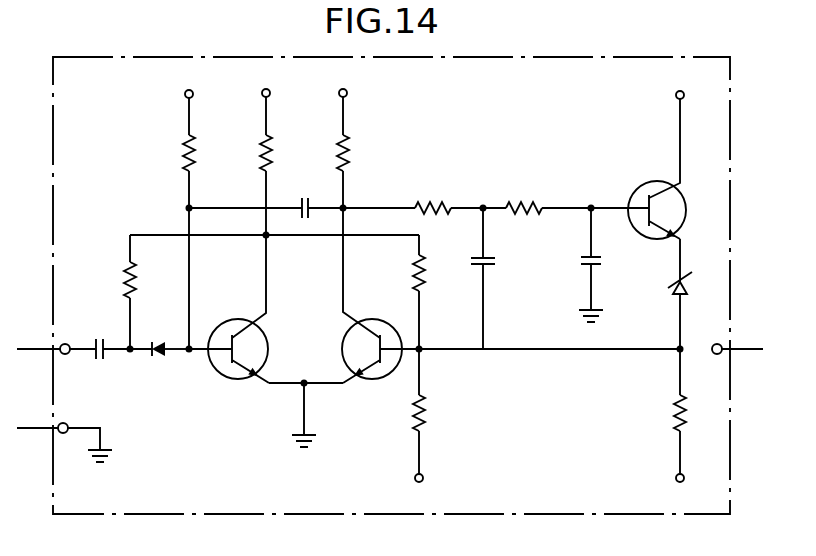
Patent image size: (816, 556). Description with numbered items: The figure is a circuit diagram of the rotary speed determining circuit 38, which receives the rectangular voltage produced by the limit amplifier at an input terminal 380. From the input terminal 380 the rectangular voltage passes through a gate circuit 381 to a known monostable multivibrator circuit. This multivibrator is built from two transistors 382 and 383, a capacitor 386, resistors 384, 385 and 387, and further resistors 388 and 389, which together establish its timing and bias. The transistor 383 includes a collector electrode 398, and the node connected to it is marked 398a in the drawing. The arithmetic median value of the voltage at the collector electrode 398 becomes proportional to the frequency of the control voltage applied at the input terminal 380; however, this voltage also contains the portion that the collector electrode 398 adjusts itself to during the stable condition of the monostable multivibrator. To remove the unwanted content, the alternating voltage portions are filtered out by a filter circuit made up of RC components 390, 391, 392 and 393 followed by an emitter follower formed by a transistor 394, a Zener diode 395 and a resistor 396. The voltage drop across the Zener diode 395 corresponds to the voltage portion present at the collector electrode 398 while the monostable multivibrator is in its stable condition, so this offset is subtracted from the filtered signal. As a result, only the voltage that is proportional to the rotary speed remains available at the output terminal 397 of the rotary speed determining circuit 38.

The rotary speed determining circuit 38 is at (543, 56).
The input terminal 380 is at (68, 343).
The gate circuit 381 is at (107, 332).
The transistor 382 is at (258, 320).
The transistor 383 is at (387, 374).
The resistor 384 is at (185, 148).
The resistor 385 is at (265, 150).
The capacitor 386 is at (315, 190).
The resistor 387 is at (348, 153).
The resistor 388 is at (424, 270).
The resistor 389 is at (425, 416).
The RC component 390 is at (442, 203).
The RC component 391 is at (494, 260).
The RC component 392 is at (532, 192).
The RC component 393 is at (580, 258).
The emitter follower transistor 394 is at (654, 182).
The Zener diode 395 is at (671, 288).
The emitter follower resistor 396 is at (675, 408).
The output terminal 397 is at (722, 355).
The collector electrode 398 is at (347, 318).
The junction 398a is at (346, 207).